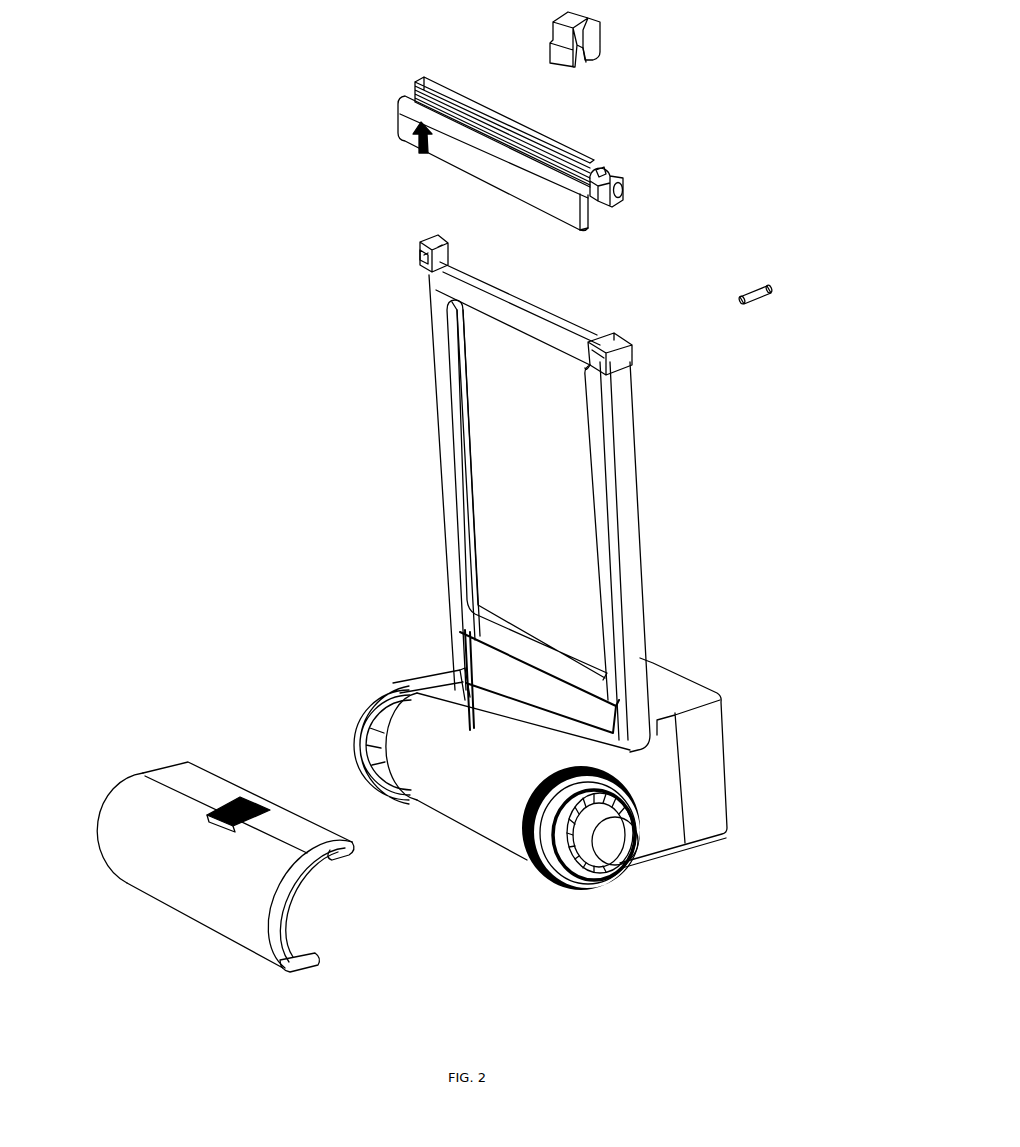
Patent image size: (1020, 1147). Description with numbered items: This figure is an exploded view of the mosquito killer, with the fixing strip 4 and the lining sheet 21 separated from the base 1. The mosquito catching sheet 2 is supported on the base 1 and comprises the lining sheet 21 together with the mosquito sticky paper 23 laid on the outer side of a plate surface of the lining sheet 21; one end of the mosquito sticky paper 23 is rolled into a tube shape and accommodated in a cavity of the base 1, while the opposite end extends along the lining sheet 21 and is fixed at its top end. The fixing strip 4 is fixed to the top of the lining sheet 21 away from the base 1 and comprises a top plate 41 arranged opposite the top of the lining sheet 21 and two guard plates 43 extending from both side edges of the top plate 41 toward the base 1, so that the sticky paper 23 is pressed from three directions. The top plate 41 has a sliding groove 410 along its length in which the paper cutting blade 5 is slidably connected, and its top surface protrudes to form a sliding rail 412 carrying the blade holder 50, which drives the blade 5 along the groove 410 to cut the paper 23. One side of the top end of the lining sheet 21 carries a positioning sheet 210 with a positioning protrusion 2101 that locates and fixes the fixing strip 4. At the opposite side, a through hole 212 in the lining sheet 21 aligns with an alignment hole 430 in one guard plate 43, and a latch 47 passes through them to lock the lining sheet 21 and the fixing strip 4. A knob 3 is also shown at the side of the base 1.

The base 1 is at (667, 797).
The mosquito catching sheet 2 is at (318, 385).
The adjusting knob 3 is at (613, 848).
The fixing strip 4 is at (505, 148).
The paper cutting blade 5 is at (583, 62).
The lining sheet 21 is at (448, 397).
The mosquito sticky paper 23 is at (500, 310).
The top plate 41 is at (609, 172).
The guard plates 43 is at (626, 190).
The latch 47 is at (748, 305).
The blade holder 50 is at (566, 32).
The positioning sheet 210 is at (437, 242).
The through hole 212 is at (596, 340).
The sliding groove 410 is at (438, 80).
The sliding rail 412 is at (599, 167).
The alignment hole 430 is at (612, 207).
The positioning protrusion 2101 is at (420, 260).